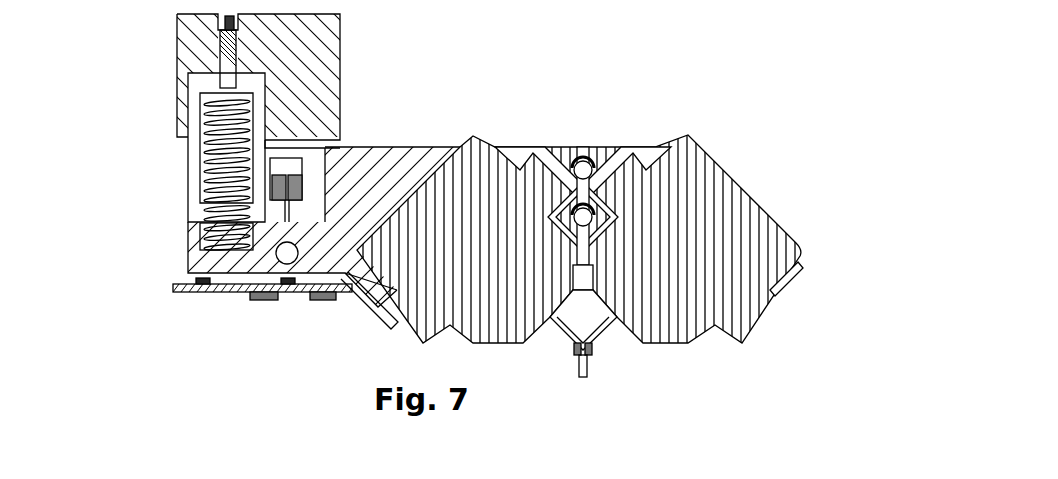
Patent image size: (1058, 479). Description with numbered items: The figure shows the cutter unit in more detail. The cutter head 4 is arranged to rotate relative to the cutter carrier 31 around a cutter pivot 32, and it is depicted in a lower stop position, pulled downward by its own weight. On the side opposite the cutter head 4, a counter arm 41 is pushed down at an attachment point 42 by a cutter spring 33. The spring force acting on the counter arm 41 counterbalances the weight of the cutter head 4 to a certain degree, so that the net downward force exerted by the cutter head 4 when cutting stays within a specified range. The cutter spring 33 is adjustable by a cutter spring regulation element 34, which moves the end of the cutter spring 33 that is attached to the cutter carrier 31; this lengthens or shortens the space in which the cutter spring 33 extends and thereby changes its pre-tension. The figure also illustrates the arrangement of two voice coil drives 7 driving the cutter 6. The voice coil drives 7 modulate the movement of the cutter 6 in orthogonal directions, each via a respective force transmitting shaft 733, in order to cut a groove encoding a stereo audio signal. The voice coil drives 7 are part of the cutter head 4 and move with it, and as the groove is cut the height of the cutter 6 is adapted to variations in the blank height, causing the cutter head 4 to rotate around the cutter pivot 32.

The cutter carrier 31 is at (341, 40).
The cutter spring regulation element 34 is at (222, 50).
The cutter spring 33 is at (188, 165).
The attachment point 42 is at (190, 265).
The counter arm 41 is at (226, 262).
The cutter pivot 32 is at (288, 265).
The voice coil drive 7 is at (481, 140).
The cutter head 4 is at (566, 147).
The force transmitting shaft 733 is at (557, 337).
The cutter 6 is at (584, 370).